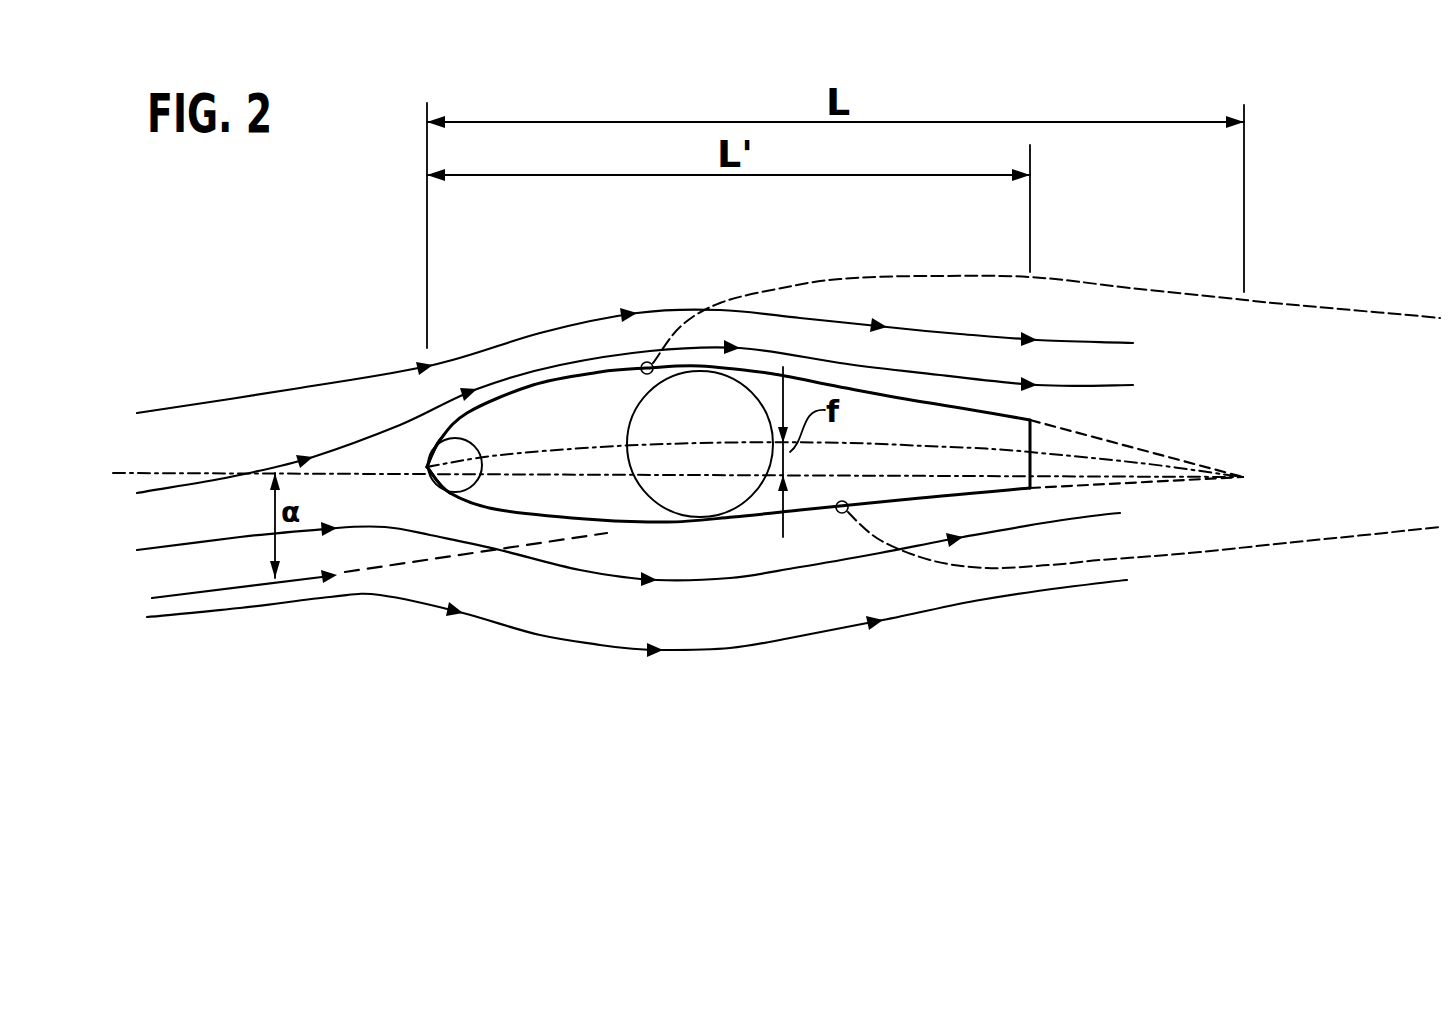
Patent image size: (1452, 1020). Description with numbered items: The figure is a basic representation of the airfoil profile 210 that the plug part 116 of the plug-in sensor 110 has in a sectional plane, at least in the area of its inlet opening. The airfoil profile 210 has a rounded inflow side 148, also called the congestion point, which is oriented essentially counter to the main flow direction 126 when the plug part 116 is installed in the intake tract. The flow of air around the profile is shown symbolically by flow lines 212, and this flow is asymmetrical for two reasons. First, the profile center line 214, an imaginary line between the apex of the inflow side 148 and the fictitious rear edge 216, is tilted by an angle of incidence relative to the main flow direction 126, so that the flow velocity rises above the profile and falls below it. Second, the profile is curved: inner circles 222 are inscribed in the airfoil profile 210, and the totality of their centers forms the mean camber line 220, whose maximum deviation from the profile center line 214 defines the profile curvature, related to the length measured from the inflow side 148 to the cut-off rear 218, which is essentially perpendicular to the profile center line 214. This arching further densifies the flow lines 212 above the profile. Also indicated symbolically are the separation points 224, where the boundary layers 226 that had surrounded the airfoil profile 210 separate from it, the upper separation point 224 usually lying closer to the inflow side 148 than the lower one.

The plug-in sensor 110 is at (728, 375).
The plug part 116 is at (728, 375).
The airfoil profile 210 is at (547, 383).
The inflow side 148 is at (420, 447).
The inner circles 222 is at (632, 418).
The profile center line 214 is at (722, 475).
The camber line 220 is at (850, 441).
The fictitious rear edge 216 is at (1245, 477).
The rear 218 is at (1032, 438).
The separation points 224 is at (650, 362).
The boundary layers 226 is at (1337, 308).
The flow lines 212 is at (933, 373).
The main flow direction 126 is at (255, 583).